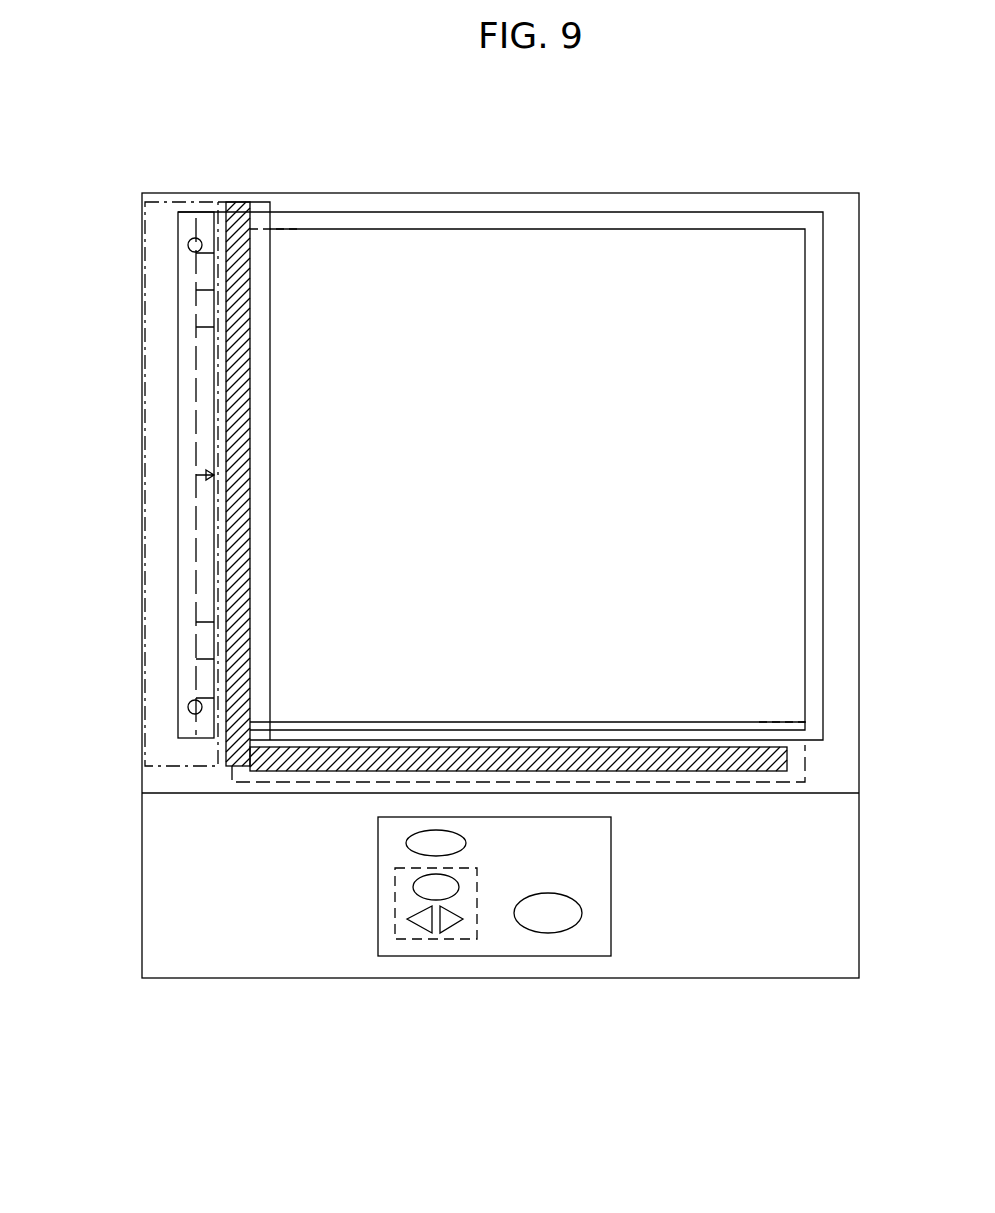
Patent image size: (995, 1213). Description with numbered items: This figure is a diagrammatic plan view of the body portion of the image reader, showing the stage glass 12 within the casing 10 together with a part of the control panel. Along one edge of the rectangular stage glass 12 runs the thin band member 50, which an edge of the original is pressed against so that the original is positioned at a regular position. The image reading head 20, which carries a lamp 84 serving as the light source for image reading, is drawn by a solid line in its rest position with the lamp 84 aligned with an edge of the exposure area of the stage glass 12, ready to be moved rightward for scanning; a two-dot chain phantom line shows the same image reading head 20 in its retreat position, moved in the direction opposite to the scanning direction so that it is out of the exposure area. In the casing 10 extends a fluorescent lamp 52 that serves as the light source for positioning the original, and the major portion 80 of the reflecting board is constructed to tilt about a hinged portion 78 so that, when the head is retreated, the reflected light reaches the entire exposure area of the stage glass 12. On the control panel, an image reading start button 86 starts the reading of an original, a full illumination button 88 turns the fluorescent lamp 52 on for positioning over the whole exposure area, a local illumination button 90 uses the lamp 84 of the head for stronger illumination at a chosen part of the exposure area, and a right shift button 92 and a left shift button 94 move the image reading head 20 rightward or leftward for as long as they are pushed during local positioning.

The casing 10 is at (860, 578).
The stage glass 12 is at (824, 458).
The image reading head 20 is at (140, 307).
The band member 50 is at (182, 443).
The fluorescent lamp 52 is at (745, 768).
The hinged portion 78 is at (808, 727).
The major portion of the reflecting board 80 is at (787, 322).
The lamp 84 is at (242, 433).
The image reading start button 86 is at (567, 915).
The full illumination button 88 is at (410, 845).
The local illumination button 90 is at (413, 890).
The right shift button 92 is at (448, 932).
The left shift button 94 is at (422, 932).